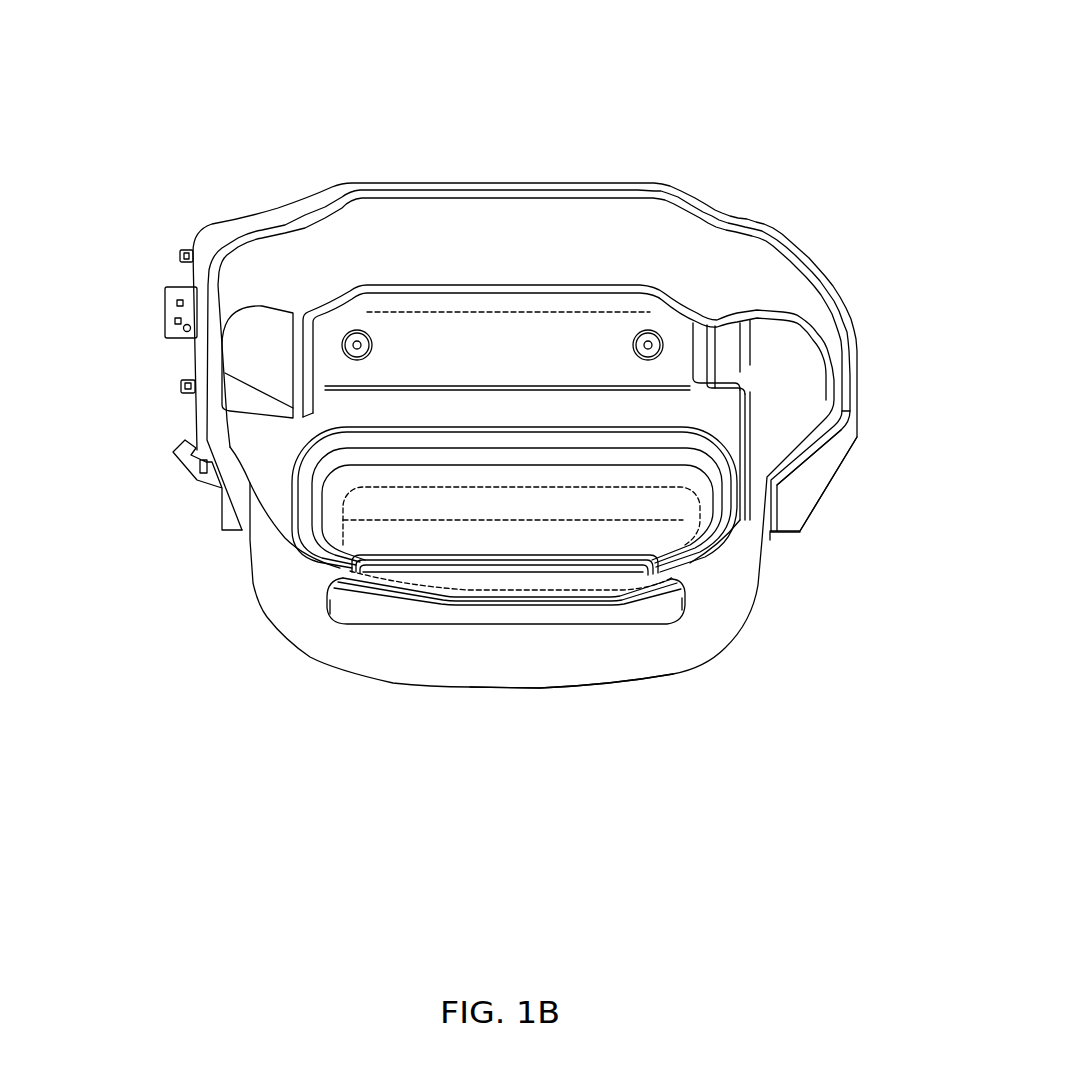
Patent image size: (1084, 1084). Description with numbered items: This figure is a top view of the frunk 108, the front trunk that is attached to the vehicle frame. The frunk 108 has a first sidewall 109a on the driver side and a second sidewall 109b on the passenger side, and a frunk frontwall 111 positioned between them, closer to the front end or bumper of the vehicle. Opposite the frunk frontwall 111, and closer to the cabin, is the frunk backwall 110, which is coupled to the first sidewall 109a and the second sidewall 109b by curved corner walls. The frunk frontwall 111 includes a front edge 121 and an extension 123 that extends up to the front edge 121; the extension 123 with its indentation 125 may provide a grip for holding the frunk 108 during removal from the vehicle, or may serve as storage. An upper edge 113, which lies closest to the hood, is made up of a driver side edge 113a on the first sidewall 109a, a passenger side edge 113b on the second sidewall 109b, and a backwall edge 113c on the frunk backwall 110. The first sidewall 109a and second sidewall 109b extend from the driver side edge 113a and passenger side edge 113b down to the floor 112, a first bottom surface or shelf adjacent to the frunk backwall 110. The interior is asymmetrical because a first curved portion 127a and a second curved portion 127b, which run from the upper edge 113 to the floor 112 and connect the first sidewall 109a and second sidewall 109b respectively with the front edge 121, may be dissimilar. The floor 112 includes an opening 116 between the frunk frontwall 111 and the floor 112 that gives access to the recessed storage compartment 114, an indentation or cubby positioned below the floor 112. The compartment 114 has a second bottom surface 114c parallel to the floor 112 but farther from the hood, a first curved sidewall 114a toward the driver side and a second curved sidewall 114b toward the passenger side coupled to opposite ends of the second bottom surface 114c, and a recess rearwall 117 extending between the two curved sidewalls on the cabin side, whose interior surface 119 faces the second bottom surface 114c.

The frunk 108 is at (793, 68).
The first sidewall 109a is at (823, 468).
The second sidewall 109b is at (213, 387).
The frunk backwall 110 is at (518, 205).
The frunk frontwall 111 is at (710, 560).
The floor 112 is at (436, 338).
The upper edge 113 is at (747, 194).
The driver side edge 113a is at (847, 388).
The passenger side edge 113b is at (198, 343).
The backwall edge 113c is at (653, 197).
The recessed storage compartment 114 is at (708, 425).
The first curved sidewall 114a is at (760, 440).
The second curved sidewall 114b is at (333, 527).
The second bottom surface 114c is at (442, 577).
The opening 116 is at (368, 425).
The recess rearwall 117 is at (418, 530).
The interior surface 119 is at (542, 503).
The front edge 121 is at (577, 686).
The extension 123 is at (332, 637).
The indentation 125 is at (660, 626).
The first curved portion 127a is at (780, 532).
The second curved portion 127b is at (250, 483).